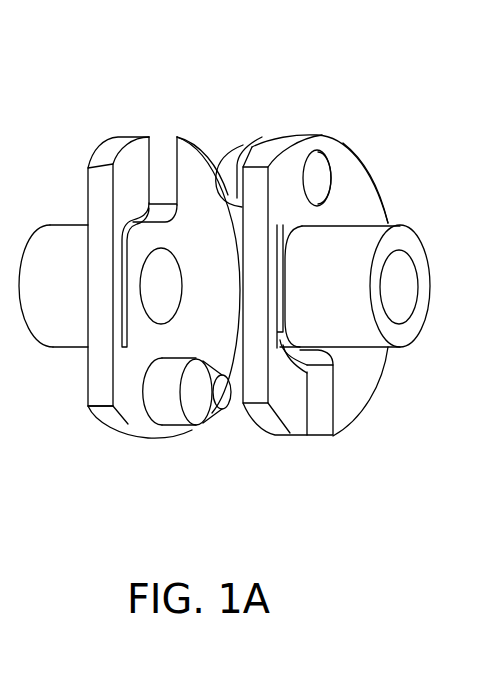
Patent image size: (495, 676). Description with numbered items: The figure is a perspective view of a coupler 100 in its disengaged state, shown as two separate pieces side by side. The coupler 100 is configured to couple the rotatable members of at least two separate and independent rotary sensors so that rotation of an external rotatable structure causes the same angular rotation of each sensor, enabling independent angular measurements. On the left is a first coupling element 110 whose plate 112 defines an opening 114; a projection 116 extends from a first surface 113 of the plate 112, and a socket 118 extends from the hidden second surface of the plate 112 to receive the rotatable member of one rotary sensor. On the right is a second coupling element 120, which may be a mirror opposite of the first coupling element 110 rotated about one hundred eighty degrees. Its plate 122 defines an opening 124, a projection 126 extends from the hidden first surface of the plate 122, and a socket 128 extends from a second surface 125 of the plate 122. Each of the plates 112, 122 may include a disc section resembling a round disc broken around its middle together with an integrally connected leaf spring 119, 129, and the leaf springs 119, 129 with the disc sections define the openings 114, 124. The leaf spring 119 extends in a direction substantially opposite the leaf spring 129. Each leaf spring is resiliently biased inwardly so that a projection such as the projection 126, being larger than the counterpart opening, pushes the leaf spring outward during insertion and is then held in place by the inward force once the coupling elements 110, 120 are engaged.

The coupler 100 is at (273, 78).
The first coupling element 110 is at (175, 128).
The plate 112 is at (207, 158).
The first surface 113 is at (125, 405).
The opening 114 is at (152, 135).
The projection 116 is at (209, 424).
The socket 118 is at (55, 347).
The leaf spring 119 is at (93, 183).
The second coupling element 120 is at (343, 132).
The plate 122 is at (375, 183).
The opening 124 is at (315, 442).
The second surface 125 is at (370, 215).
The projection 126 is at (260, 143).
The socket 128 is at (402, 348).
The leaf spring 129 is at (282, 407).